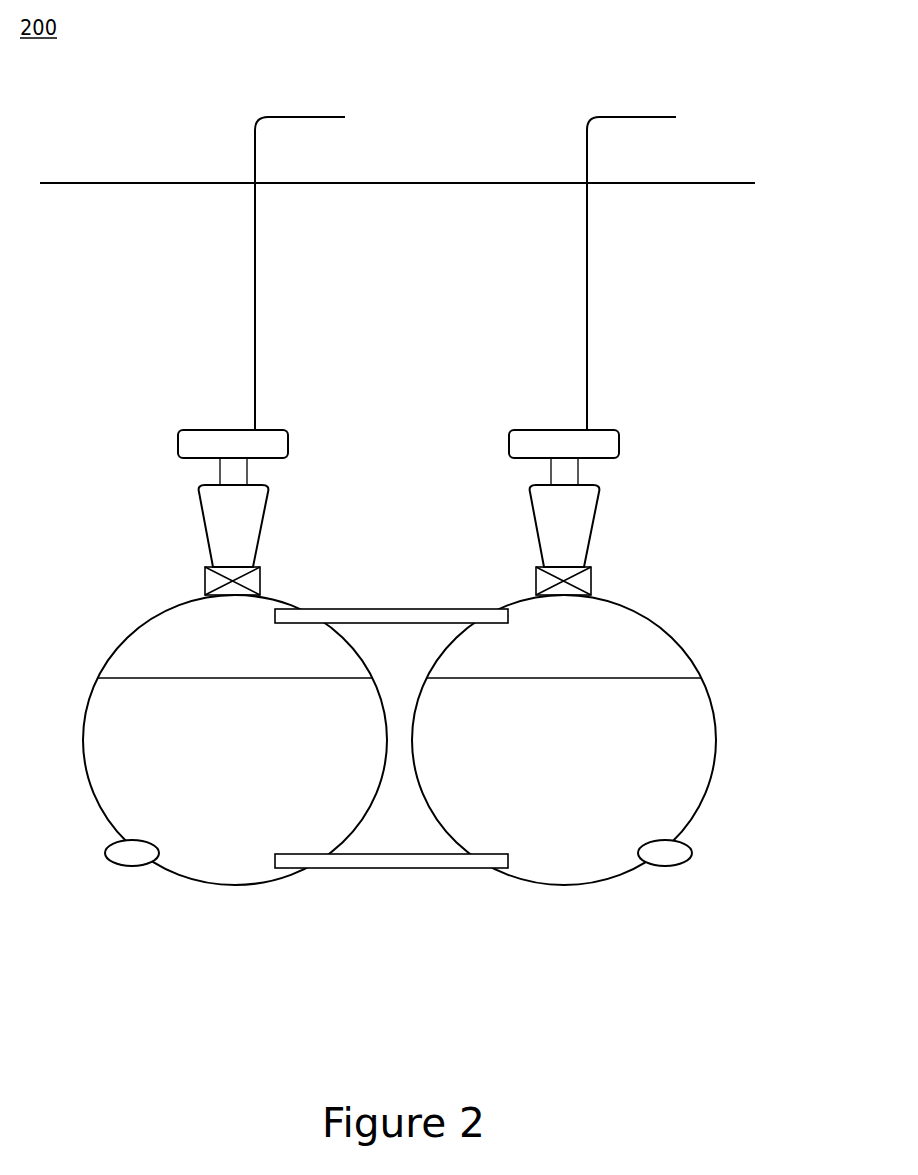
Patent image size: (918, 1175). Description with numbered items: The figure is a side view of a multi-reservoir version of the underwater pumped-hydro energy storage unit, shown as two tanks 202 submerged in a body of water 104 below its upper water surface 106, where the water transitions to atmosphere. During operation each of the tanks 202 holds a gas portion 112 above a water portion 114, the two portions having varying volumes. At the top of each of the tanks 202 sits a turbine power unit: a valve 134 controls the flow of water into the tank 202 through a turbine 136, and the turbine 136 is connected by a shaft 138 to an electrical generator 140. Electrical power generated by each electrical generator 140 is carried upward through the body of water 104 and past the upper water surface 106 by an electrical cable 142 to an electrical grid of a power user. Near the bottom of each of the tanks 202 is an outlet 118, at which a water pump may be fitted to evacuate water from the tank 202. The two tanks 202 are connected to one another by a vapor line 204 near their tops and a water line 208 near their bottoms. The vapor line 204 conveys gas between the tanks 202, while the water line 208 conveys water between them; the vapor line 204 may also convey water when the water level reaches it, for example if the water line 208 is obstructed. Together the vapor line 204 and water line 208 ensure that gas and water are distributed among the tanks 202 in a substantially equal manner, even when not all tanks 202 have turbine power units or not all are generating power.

The body of water 104 is at (761, 450).
The upper water surface 106 is at (657, 183).
The gas portion 112 is at (668, 662).
The water portion 114 is at (668, 717).
The outlet 118 is at (110, 843).
The valve 134 is at (262, 578).
The turbine 136 is at (263, 523).
The shaft 138 is at (220, 470).
The electrical generator 140 is at (280, 427).
The electrical cable 142 is at (255, 333).
The tanks 202 is at (135, 628).
The vapor line 204 is at (413, 609).
The water line 208 is at (385, 872).